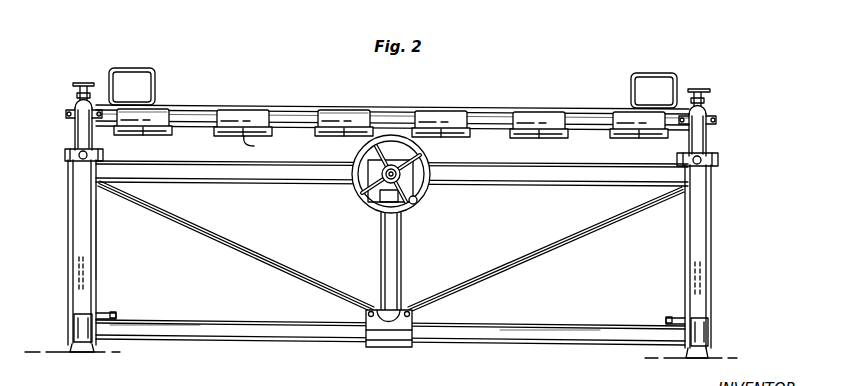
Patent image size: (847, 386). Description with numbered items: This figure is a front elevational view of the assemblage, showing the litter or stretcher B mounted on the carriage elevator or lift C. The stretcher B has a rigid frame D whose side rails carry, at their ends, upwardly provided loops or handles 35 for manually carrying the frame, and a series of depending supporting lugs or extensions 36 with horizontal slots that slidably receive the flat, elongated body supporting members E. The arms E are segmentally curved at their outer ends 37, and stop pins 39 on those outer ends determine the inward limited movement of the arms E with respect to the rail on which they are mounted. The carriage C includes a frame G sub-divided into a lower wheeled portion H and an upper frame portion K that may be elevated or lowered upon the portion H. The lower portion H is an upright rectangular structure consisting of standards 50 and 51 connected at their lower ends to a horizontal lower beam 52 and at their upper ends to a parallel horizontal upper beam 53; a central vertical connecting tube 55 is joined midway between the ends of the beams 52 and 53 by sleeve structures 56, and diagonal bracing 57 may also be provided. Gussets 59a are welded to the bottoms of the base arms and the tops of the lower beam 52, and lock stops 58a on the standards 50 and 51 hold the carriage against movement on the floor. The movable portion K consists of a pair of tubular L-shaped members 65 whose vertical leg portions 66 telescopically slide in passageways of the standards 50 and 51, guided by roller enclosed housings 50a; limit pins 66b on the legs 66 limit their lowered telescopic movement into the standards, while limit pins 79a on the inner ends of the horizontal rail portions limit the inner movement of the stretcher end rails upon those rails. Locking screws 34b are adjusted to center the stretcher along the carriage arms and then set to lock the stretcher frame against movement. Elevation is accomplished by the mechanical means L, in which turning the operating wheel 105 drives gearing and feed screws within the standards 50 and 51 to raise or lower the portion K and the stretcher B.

The locking screws 34b is at (83, 84).
The limit pins 79a is at (68, 112).
The L-shaped members 65 is at (67, 126).
The vertical leg portions 66 is at (93, 136).
The limit pins 66b is at (66, 157).
The roller enclosed housings 50a is at (84, 160).
The standard 50 is at (70, 222).
The standard 51 is at (697, 232).
The carriage elevator or lift C is at (103, 248).
The upper frame portion K is at (712, 136).
The litter or stretcher B is at (206, 102).
The rigid frame D is at (497, 108).
The body supporting members E is at (332, 110).
The loops or handles 35 is at (152, 82).
The supporting lugs or extensions 36 is at (166, 136).
The outer ends 37 is at (157, 112).
The stop pins 39 is at (262, 148).
The upper beam 53 is at (276, 178).
The mechanical means L is at (363, 202).
The sleeve structures 56 is at (424, 193).
The operating wheel 105 is at (416, 204).
The central vertical connecting tube 55 is at (390, 251).
The diagonal bracing 57 is at (290, 268).
The lower beam 52 is at (312, 338).
The lower wheeled portion H is at (150, 330).
The frame G is at (533, 328).
The gussets 59a is at (110, 313).
The lock stops 58a is at (72, 343).